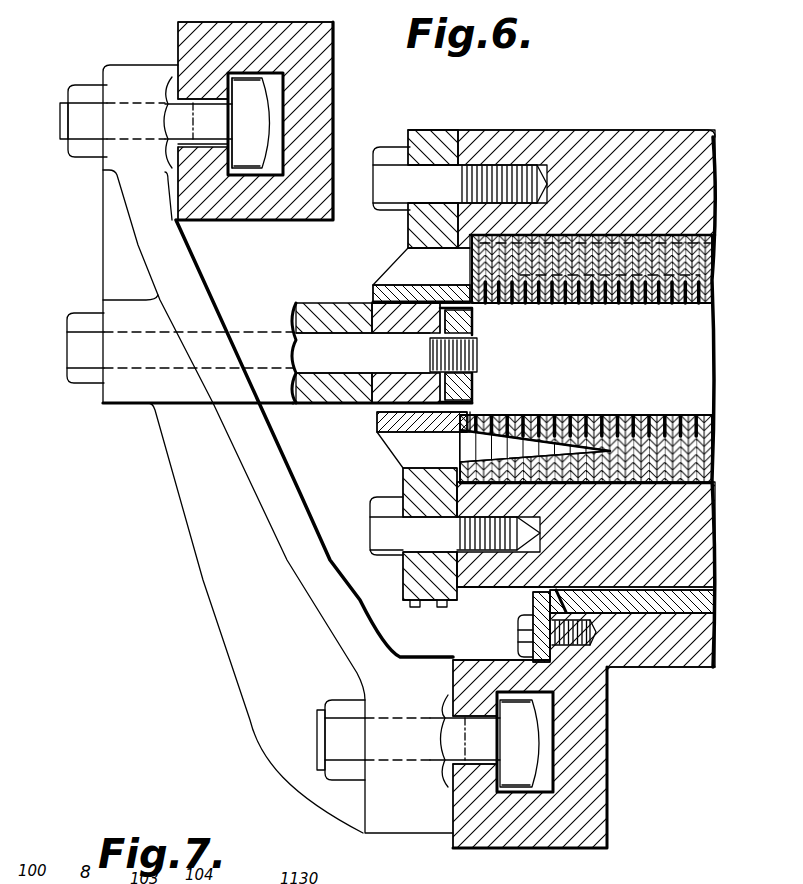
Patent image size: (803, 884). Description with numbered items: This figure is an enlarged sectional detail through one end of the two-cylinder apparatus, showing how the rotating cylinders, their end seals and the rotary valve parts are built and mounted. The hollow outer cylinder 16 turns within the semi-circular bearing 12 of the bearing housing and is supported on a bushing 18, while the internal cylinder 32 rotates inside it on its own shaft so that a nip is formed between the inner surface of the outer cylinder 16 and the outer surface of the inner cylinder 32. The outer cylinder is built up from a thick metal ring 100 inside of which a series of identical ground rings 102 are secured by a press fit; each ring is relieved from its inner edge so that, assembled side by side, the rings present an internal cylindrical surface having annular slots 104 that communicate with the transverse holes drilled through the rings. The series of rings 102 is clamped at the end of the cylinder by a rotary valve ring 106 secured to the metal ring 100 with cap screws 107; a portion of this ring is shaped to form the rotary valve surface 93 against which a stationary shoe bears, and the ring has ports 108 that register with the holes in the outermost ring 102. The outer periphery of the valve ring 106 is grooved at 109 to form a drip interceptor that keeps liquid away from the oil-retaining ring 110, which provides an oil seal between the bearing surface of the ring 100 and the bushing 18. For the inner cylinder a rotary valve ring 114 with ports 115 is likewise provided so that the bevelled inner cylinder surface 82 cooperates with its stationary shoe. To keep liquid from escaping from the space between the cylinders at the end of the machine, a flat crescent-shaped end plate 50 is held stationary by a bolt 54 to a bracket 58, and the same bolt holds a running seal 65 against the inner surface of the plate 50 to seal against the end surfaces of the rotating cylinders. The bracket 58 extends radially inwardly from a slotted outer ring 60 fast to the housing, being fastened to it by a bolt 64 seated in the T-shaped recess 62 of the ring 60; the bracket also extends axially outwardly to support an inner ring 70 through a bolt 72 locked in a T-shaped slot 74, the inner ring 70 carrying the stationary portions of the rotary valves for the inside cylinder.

The semi-circular bearing 12 is at (680, 647).
The outer cylinder 16 is at (687, 548).
The bushing 18 is at (700, 600).
The internal cylinder 32 is at (618, 148).
The crescent-shaped plate 50 is at (380, 318).
The bolt 54 is at (78, 358).
The bracket 58 is at (197, 517).
The slotted outer ring 60 is at (593, 753).
The T-slot 62 is at (550, 723).
The bolt 64 is at (522, 773).
The running seal 65 is at (467, 300).
The inner ring 70 is at (313, 113).
The bolt 72 is at (62, 140).
The T-shaped slot 74 is at (278, 95).
The rotary valve cooperating portion 82 is at (393, 255).
The rotary valve surface 93 is at (378, 437).
The thick metal ring 100 is at (490, 573).
The ground ring 102 is at (579, 415).
The annular slot 104 is at (650, 415).
The rotary valve ring 106 is at (398, 475).
The cap screw 107 is at (372, 520).
The port 108 is at (493, 412).
The groove 109 is at (410, 607).
The oil-retaining ring 110 is at (547, 593).
The rotary valve ring 114 is at (422, 227).
The port 115 is at (405, 267).